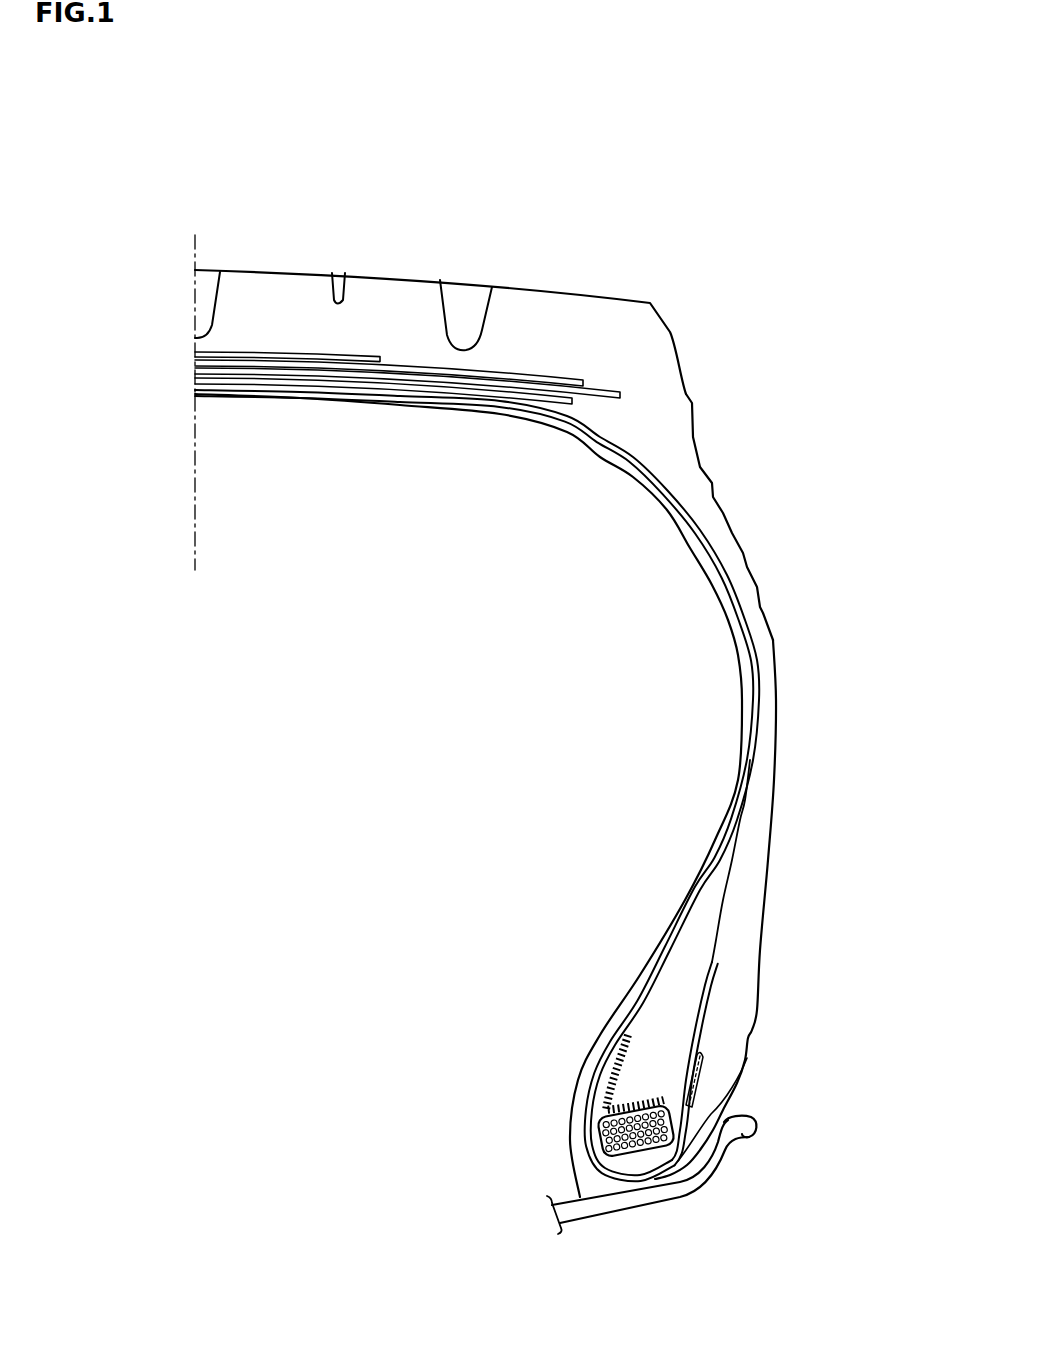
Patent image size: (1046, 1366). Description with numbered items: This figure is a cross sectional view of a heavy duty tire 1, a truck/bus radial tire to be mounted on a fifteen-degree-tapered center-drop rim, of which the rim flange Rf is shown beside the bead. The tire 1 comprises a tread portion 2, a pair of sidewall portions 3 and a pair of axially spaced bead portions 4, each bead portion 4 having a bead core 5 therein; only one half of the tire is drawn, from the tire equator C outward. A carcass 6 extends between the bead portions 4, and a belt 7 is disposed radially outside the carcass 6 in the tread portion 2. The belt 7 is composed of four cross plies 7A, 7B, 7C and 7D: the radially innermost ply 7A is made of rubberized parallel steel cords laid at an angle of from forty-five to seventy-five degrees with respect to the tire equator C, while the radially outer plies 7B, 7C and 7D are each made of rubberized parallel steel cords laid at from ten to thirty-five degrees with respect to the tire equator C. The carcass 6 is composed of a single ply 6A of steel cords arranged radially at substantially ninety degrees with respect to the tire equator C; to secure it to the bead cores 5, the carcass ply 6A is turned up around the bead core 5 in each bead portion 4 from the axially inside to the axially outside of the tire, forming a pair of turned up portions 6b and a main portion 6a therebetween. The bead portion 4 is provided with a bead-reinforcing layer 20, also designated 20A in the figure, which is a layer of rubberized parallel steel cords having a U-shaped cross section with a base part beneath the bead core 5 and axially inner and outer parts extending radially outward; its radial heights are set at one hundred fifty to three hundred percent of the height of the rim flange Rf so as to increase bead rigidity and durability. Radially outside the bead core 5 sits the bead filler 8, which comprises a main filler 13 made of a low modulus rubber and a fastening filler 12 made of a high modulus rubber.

The heavy duty tire 1 is at (525, 667).
The tread portion 2 is at (392, 288).
The sidewall portion 3 is at (789, 669).
The bead portion 4 is at (541, 832).
The bead core 5 is at (640, 1135).
The carcass 6 is at (477, 785).
The carcass ply 6A is at (477, 785).
The main portion 6a is at (703, 890).
The turned up portion 6b is at (702, 980).
The belt 7 is at (341, 368).
The radially innermost belt ply 7A is at (338, 401).
The radially outer belt ply 7B is at (195, 368).
The radially outer belt ply 7C is at (195, 361).
The radially outer belt ply 7D is at (195, 353).
The bead filler 8 is at (550, 1035).
The fastening filler 12 is at (606, 1082).
The main filler 13 is at (657, 1037).
The bead-reinforcing layer 20 is at (786, 1065).
The reinforcing cord layer 20A is at (697, 1087).
The tire equator C is at (195, 553).
The rim flange Rf is at (758, 1127).